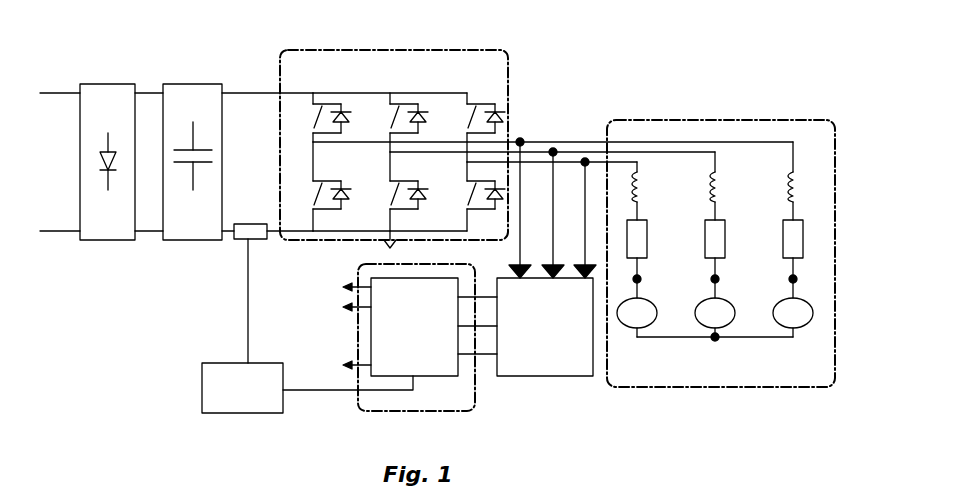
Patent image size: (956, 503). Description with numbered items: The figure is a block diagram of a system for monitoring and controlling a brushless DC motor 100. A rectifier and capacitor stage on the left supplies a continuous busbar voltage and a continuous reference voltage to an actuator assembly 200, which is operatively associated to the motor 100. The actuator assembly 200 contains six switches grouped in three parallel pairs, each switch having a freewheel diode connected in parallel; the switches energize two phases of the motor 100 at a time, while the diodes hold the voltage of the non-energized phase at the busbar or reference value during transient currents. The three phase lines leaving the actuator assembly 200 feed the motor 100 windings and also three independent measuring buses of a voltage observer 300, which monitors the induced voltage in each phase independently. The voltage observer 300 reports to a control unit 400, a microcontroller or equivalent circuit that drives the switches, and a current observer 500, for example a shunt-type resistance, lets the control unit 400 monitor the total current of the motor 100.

The brushless motor 100 is at (682, 117).
The actuator assembly 200 is at (335, 47).
The voltage observer 300 is at (538, 377).
The control unit 400 is at (418, 414).
The current observer 500 is at (229, 362).